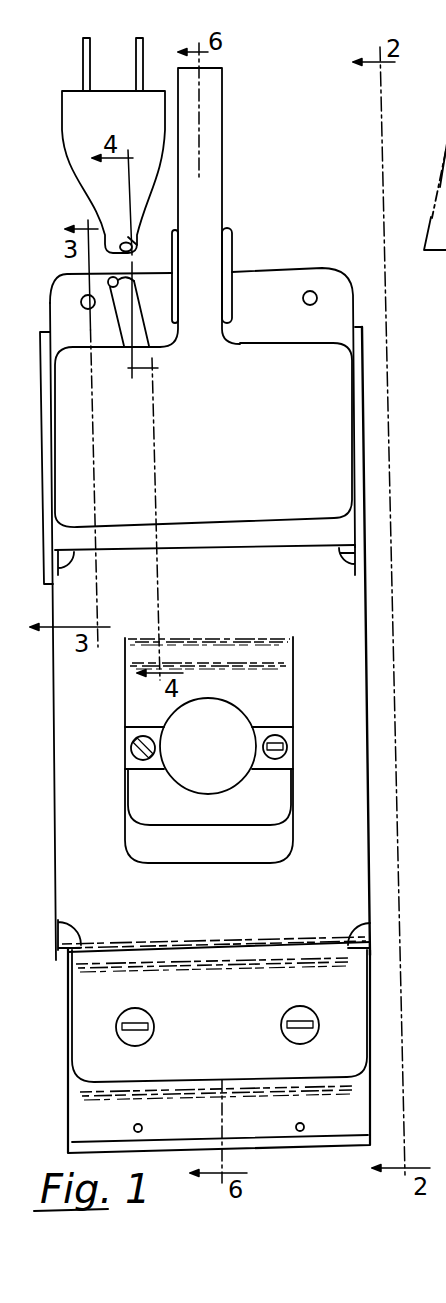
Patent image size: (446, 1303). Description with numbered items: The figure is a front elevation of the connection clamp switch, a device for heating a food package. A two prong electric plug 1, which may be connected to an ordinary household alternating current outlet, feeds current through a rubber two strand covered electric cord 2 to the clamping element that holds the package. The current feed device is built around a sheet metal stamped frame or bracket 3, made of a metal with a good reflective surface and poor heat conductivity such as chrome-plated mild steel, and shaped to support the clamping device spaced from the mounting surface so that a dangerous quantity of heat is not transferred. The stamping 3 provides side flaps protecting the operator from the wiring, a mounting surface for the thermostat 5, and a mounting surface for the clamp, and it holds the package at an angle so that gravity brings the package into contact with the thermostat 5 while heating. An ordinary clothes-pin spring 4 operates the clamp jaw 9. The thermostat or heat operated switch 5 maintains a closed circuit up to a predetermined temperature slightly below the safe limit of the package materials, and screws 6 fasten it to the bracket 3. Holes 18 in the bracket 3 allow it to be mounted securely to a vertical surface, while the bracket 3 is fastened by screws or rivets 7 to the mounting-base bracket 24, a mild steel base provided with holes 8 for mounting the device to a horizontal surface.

The two prong electric plug 1 is at (72, 125).
The electric cord 2 is at (127, 297).
The frame or bracket 3 is at (55, 302).
The clothes-pin spring 4 is at (233, 248).
The thermostat 5 is at (175, 776).
The screws 6 is at (273, 735).
The screw 7 is at (128, 1018).
The holes 8 is at (142, 1126).
The clamp jaw 9 is at (437, 220).
The holes 18 is at (82, 297).
The mounting-base bracket 24 is at (78, 1120).